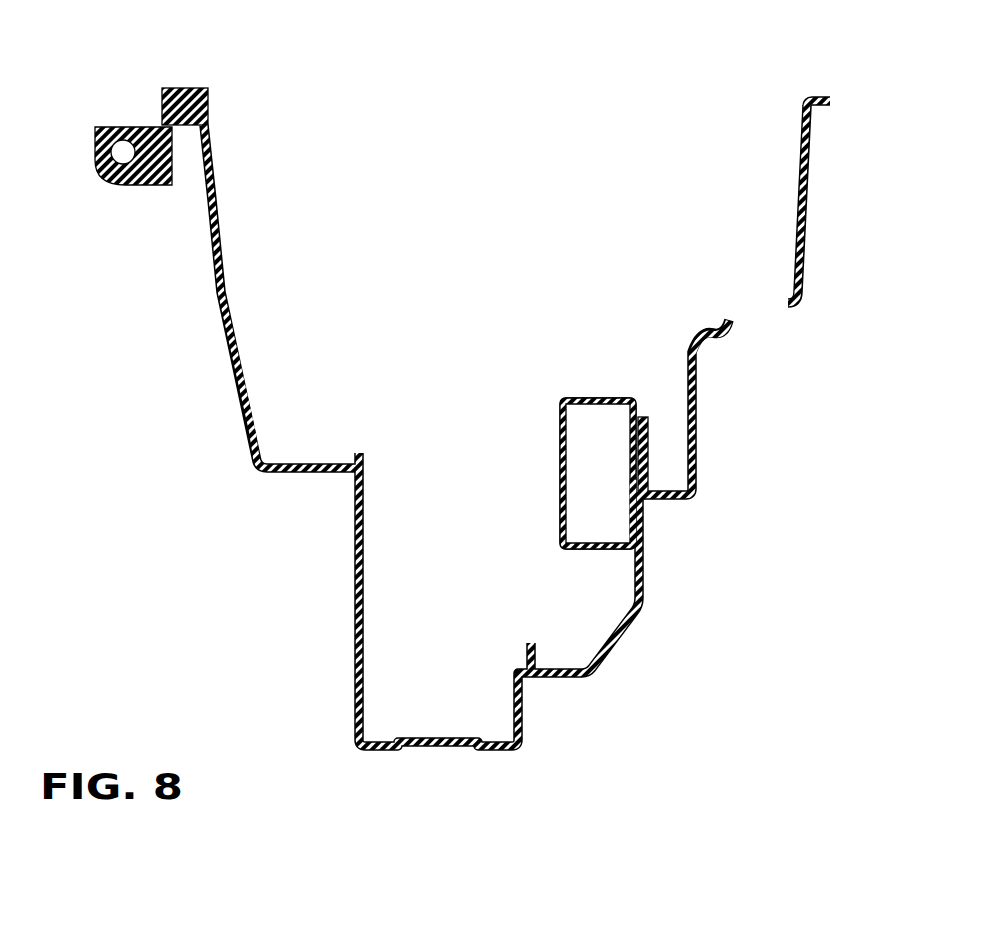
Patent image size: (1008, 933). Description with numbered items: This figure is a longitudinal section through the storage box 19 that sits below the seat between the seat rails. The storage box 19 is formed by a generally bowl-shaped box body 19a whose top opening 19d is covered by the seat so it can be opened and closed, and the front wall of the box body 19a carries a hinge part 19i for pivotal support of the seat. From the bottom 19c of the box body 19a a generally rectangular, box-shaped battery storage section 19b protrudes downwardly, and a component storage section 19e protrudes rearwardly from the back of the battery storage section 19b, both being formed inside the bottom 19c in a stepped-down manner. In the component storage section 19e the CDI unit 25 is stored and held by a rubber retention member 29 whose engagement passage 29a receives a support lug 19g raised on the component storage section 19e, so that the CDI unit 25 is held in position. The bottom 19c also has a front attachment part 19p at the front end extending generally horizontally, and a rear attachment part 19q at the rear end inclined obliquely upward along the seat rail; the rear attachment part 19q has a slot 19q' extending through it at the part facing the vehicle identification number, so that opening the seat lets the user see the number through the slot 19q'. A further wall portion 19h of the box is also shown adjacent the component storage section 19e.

The storage box 19 is at (208, 292).
The hinge part 19i is at (100, 182).
The bottom 19c is at (281, 478).
The front attachment part 19p is at (317, 478).
The battery storage section 19b is at (352, 612).
The component storage section 19e is at (642, 602).
The support lug 19g is at (648, 412).
The upright portion 19h is at (698, 340).
The slot 19q' is at (743, 376).
The box body 19a is at (813, 238).
The top opening 19d is at (803, 97).
The rear attachment part 19q is at (834, 330).
The CDI unit 25 is at (562, 394).
The rubber retention member 29 is at (598, 396).
The engagement passage 29a is at (630, 490).